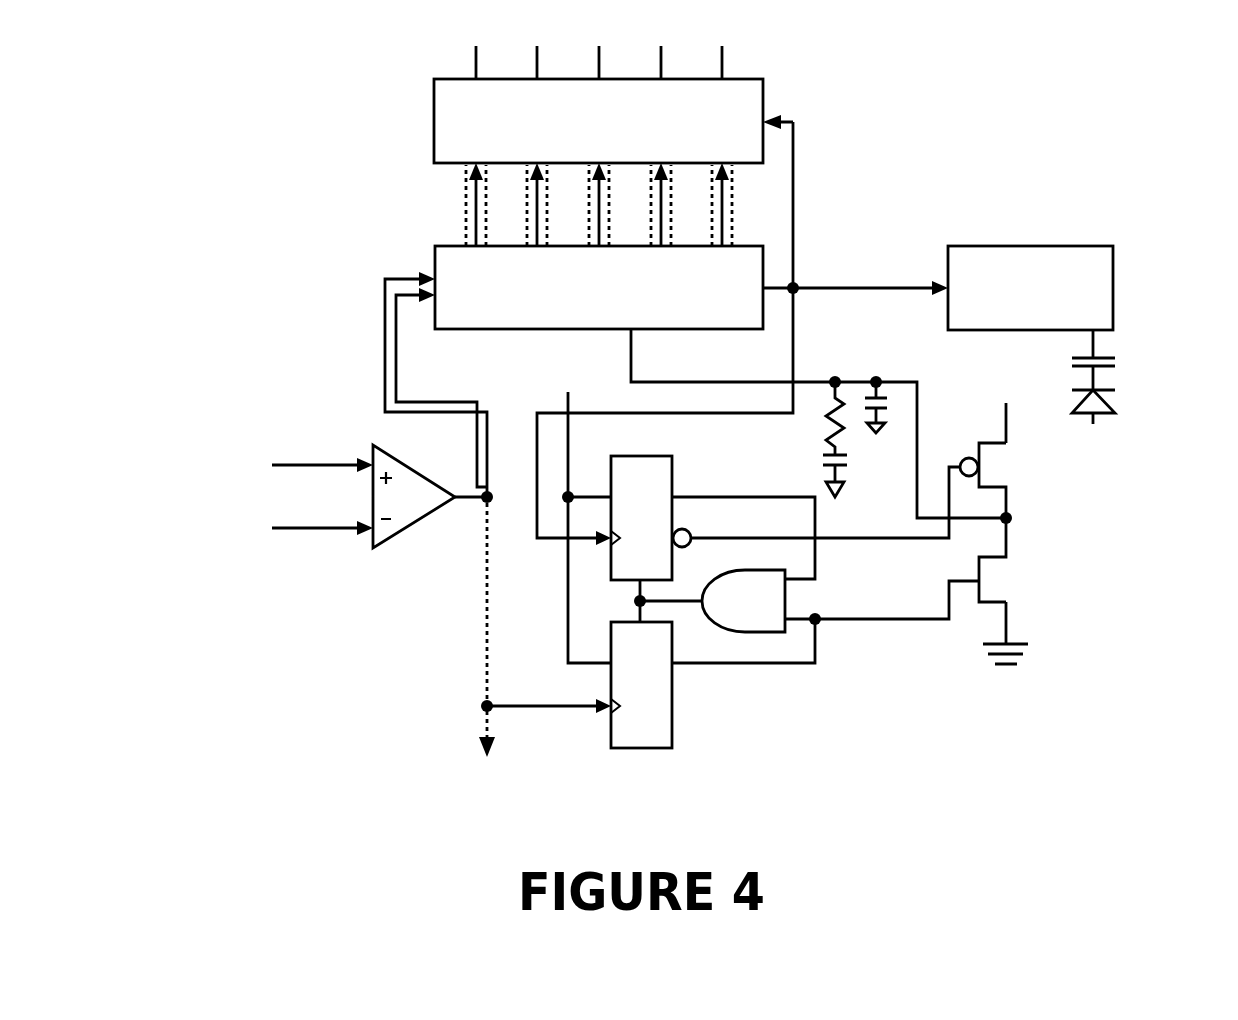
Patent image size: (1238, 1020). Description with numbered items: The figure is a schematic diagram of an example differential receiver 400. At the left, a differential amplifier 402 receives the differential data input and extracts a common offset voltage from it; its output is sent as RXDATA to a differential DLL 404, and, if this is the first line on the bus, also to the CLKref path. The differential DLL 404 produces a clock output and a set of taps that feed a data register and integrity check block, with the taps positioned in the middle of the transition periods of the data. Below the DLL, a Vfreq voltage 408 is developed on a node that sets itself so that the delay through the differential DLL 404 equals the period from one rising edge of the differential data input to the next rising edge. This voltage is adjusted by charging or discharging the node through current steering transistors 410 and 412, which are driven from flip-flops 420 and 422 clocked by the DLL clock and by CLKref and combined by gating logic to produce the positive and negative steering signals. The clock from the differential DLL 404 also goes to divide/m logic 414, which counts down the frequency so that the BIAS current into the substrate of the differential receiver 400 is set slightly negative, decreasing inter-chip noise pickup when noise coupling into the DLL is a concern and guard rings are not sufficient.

The differential receiver 400 is at (1032, 143).
The differential amplifier 402 is at (370, 541).
The differential DLL 404 is at (434, 264).
The Vfreq voltage 408 is at (814, 381).
The current steering transistor 410 is at (1000, 467).
The current steering transistor 412 is at (1000, 582).
The divide/m logic 414 is at (1113, 266).
The first D flip-flop 420 is at (672, 465).
The second D flip-flop 422 is at (672, 718).